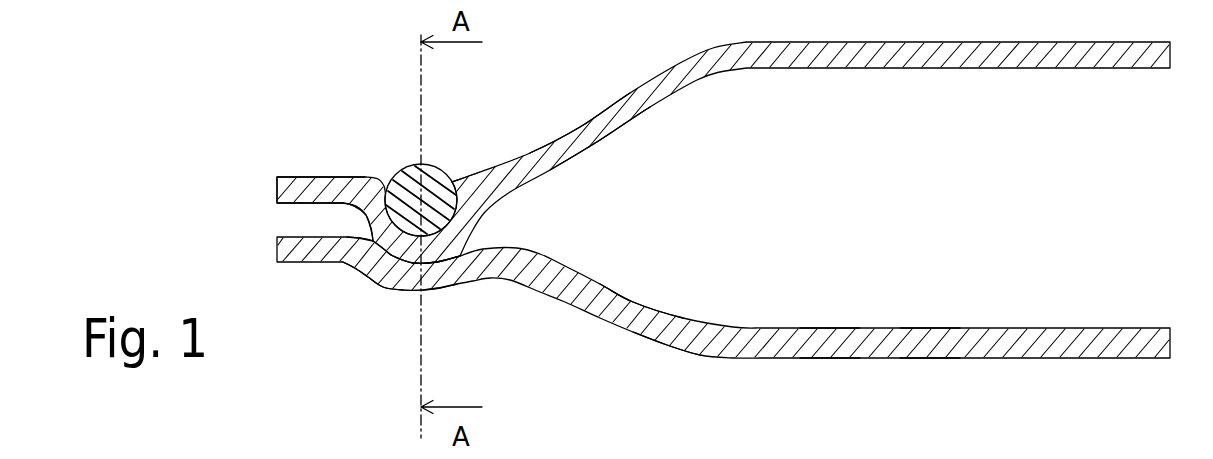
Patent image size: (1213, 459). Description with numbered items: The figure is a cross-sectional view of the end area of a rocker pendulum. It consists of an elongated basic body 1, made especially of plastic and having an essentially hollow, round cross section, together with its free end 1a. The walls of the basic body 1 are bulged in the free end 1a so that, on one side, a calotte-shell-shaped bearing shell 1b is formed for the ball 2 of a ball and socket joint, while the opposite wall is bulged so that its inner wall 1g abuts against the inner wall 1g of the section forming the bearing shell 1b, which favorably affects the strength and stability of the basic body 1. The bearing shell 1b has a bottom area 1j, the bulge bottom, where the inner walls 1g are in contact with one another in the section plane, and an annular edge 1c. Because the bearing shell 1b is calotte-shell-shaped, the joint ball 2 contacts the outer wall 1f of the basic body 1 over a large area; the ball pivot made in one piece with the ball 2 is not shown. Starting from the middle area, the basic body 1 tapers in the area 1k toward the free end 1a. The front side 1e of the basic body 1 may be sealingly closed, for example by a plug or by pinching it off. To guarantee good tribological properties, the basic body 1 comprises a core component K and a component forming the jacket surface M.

The basic body 1 is at (875, 78).
The free end 1a is at (440, 272).
The bearing shell 1b is at (381, 223).
The annular edge 1c is at (453, 183).
The front side 1e is at (277, 193).
The outer wall 1f is at (663, 343).
The inner wall 1g is at (647, 302).
The bottom area 1j is at (383, 285).
The tapering area 1k is at (588, 144).
The ball 2 is at (408, 167).
The core component K is at (830, 338).
The jacket surface component M is at (941, 358).